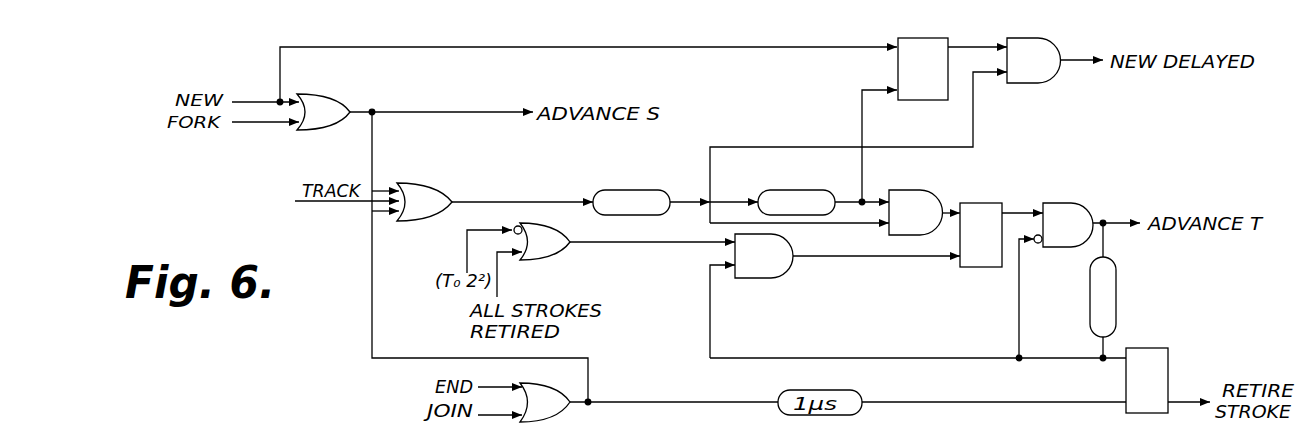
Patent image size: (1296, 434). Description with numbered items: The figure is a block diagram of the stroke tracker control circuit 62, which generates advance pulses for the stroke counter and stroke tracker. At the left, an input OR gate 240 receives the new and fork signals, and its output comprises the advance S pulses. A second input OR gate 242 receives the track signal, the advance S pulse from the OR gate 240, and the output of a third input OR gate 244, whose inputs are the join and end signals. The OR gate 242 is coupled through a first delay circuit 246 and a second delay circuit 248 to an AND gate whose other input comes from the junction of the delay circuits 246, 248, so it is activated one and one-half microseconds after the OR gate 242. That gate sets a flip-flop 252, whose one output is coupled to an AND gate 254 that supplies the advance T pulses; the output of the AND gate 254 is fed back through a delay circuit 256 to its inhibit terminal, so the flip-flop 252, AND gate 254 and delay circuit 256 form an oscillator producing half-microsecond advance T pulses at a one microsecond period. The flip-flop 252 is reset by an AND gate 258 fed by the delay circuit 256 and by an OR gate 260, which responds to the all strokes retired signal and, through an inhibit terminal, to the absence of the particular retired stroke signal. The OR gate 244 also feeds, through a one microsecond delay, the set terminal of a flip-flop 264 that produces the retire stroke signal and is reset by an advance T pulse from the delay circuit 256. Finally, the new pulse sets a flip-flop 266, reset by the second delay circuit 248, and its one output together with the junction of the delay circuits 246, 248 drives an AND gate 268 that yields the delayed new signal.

The stroke tracker control circuit 62 is at (588, 61).
The input OR gate 240 is at (328, 94).
The input OR gate 242 is at (428, 183).
The input OR gate 244 is at (552, 419).
The first delay circuit 246 is at (636, 190).
The second delay circuit 248 is at (806, 190).
The flip-flop 252 is at (986, 203).
The AND gate 254 is at (1072, 203).
The delay circuit 256 is at (1117, 287).
The AND gate 258 is at (765, 278).
The OR gate 260 is at (560, 257).
The flip-flop 264 is at (1158, 348).
The flip-flop 266 is at (930, 38).
The AND gate 268 is at (1028, 38).